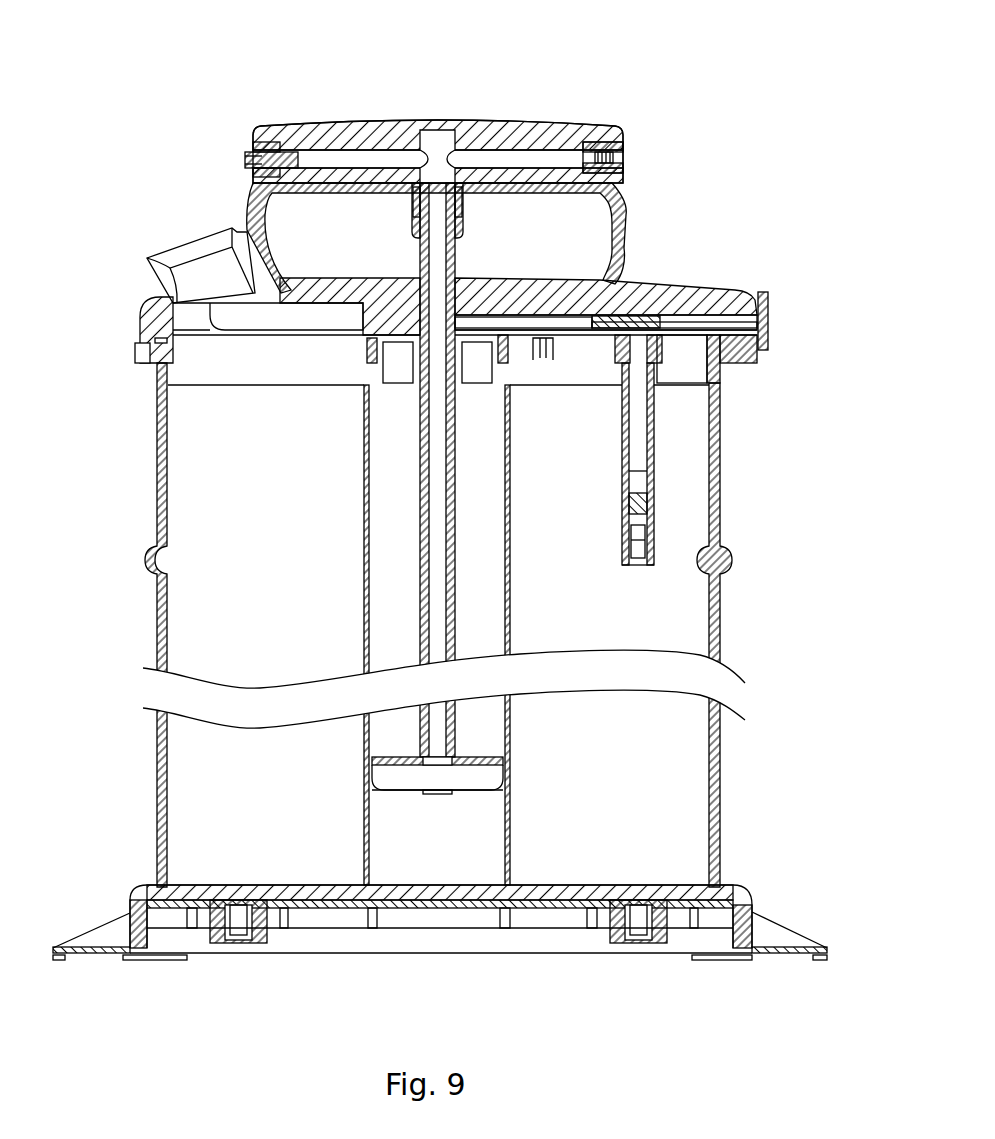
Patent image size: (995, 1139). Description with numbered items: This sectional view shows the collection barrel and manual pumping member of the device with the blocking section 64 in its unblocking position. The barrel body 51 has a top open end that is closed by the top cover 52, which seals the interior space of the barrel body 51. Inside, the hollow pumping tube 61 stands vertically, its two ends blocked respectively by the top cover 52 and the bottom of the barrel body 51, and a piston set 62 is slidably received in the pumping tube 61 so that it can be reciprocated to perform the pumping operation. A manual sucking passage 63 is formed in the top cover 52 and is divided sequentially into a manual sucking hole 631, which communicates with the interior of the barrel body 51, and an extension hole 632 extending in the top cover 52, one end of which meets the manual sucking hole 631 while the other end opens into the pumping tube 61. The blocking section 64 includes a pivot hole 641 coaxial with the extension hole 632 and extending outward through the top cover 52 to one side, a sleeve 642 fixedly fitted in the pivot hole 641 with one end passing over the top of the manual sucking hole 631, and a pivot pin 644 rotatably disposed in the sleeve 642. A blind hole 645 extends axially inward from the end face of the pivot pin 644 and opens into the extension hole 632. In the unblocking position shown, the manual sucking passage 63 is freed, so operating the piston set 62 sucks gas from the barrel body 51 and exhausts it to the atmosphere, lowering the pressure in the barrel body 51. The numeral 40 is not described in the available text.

The base 40 is at (786, 1016).
The barrel body 51 is at (157, 478).
The top cover 52 is at (140, 303).
The pumping tube 61 is at (364, 604).
The piston set 62 is at (391, 792).
The manual sucking passage 63 is at (513, 316).
The manual sucking hole 631 is at (642, 362).
The extension hole 632 is at (486, 320).
The blocking section 64 is at (770, 318).
The pivot hole 641 is at (696, 313).
The sleeve 642 is at (660, 313).
The pivot pin 644 is at (735, 313).
The blind hole 645 is at (622, 314).